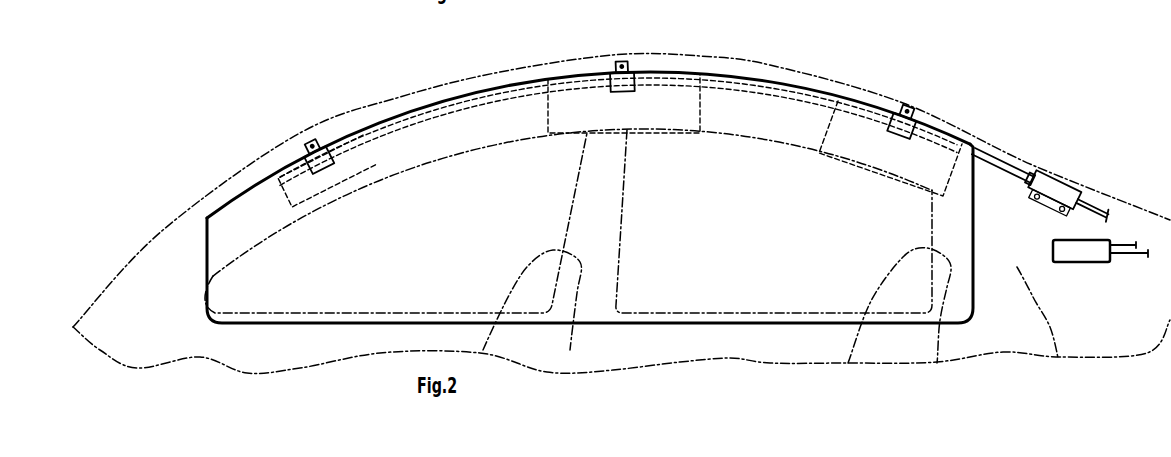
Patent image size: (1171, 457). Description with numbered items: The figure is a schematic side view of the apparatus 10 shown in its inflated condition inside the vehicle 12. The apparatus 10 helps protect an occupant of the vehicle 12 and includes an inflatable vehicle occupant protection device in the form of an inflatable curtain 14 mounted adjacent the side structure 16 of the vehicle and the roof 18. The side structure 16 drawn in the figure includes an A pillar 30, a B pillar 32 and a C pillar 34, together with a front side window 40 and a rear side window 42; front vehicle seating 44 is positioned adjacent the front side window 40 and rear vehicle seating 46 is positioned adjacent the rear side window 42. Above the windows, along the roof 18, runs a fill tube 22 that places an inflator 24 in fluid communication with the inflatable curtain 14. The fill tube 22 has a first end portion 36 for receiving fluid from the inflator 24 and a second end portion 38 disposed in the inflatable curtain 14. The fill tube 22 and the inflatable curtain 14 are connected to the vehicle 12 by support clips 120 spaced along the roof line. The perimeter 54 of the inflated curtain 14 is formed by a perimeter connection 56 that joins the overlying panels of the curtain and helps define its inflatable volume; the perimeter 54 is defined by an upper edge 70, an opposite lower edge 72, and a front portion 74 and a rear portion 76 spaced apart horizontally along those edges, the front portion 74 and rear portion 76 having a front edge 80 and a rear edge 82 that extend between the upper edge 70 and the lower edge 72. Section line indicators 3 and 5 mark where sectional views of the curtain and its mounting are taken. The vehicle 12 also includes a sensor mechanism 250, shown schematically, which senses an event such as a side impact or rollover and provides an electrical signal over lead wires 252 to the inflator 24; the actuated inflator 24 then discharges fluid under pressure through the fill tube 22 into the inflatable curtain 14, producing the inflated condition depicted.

The section line 3- 3 is at (602, 51).
The section line 5- 5 is at (613, 62).
The apparatus 10 is at (430, 55).
The vehicle 12 is at (280, 61).
The inflatable curtain 14 is at (448, 263).
The side structure 16 is at (593, 300).
The roof 18 is at (418, 82).
The fill tube 22 is at (983, 147).
The inflator 24 is at (1055, 188).
The A pillar 30 is at (177, 262).
The B pillar 32 is at (605, 222).
The C pillar 34 is at (1058, 362).
The first end portion 36 is at (1021, 167).
The second end portion 38 is at (488, 102).
The front side window 40 is at (383, 300).
The rear side window 42 is at (792, 298).
The front vehicle seating 44 is at (524, 268).
The rear vehicle seating 46 is at (888, 273).
The perimeter 54 is at (289, 326).
The perimeter connection 56 is at (680, 327).
The upper edge 70 is at (560, 78).
The lower edge 72 is at (732, 327).
The front portion 74 is at (237, 287).
The rear portion 76 is at (953, 245).
The front edge 80 is at (207, 283).
The rear edge 82 is at (975, 236).
The support clips 120 is at (328, 162).
The sensor mechanism 250 is at (1087, 263).
The lead wires 252 is at (1092, 202).